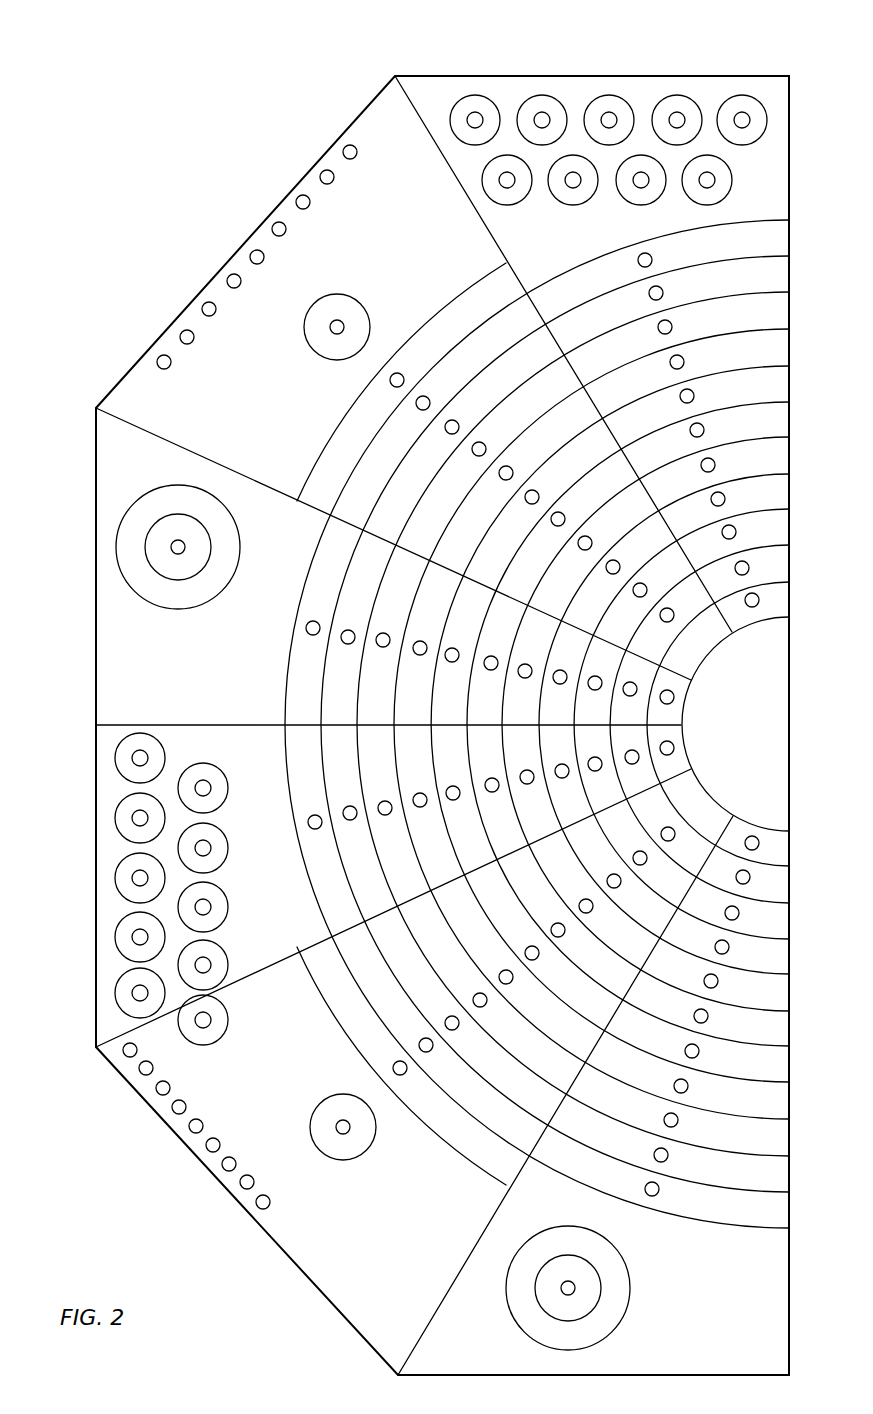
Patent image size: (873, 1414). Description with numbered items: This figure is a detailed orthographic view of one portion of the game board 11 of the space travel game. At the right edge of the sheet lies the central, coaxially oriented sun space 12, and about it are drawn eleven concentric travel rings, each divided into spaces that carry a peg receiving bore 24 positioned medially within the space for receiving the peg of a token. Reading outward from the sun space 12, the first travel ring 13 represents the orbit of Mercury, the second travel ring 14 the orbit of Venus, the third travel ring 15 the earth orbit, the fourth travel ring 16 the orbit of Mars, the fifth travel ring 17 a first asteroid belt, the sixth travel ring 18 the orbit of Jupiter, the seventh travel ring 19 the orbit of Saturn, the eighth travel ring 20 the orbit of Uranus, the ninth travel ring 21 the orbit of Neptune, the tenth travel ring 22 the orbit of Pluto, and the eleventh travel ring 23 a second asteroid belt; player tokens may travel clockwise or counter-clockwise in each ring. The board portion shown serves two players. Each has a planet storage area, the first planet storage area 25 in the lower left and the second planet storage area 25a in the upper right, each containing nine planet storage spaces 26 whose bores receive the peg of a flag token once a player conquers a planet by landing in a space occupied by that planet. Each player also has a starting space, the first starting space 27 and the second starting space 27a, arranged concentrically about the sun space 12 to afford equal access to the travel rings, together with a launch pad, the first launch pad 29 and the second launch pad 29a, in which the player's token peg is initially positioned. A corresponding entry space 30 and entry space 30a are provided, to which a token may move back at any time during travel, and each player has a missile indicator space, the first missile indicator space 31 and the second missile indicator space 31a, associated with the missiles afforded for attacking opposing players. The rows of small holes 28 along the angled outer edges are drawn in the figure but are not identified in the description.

The game board 11 is at (460, 72).
The sun space 12 is at (753, 711).
The first travel ring 13 is at (745, 584).
The second travel ring 14 is at (736, 549).
The third travel ring 15 is at (732, 513).
The fourth travel ring 16 is at (729, 479).
The fifth travel ring 17 is at (717, 441).
The sixth travel ring 18 is at (711, 406).
The seventh travel ring 19 is at (709, 370).
The eighth travel ring 20 is at (702, 335).
The ninth travel ring 21 is at (682, 302).
The tenth travel ring 22 is at (686, 264).
The eleventh travel ring 23 is at (606, 254).
The peg receiving bore 24 is at (522, 678).
The first planet storage area 25 is at (122, 975).
The second planet storage area 25a is at (595, 44).
The planet storage space 26 is at (641, 176).
The first starting space 27 is at (408, 1257).
The second starting space 27a is at (405, 229).
The edge holes 28 is at (296, 200).
The first launch pad 29 is at (343, 1130).
The second launch pad 29a is at (340, 326).
The entry space 30 is at (393, 1066).
The entry space 30a is at (365, 412).
The first missile indicator space 31 is at (572, 1292).
The second missile indicator space 31a is at (178, 552).